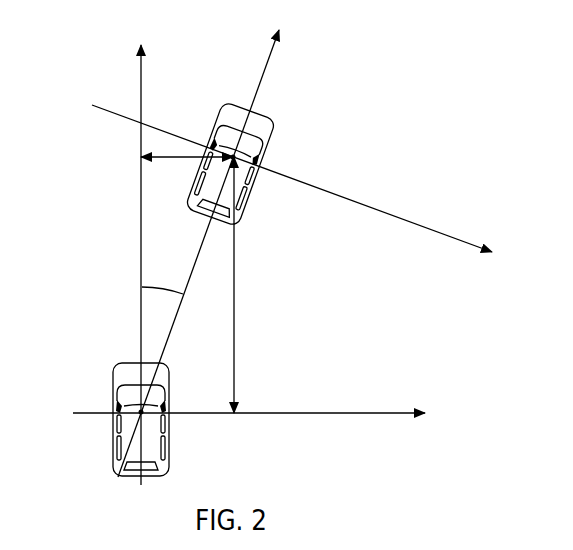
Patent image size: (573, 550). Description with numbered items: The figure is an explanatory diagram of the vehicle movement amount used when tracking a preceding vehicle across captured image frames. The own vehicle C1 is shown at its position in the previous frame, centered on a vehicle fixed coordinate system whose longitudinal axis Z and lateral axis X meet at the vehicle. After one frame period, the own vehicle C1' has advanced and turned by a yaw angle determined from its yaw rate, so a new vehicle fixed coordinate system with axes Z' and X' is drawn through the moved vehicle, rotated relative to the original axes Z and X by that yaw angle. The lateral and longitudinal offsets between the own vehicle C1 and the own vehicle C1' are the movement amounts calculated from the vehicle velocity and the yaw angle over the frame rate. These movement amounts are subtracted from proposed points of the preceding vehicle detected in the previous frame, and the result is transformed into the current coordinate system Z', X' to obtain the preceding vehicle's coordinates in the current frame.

The own vehicle C1 is at (109, 419).
The own vehicle C1' is at (268, 163).
The Z axis Z is at (125, 265).
The X axis X is at (249, 430).
The Z' axis Z' is at (198, 253).
The X' axis X' is at (292, 195).